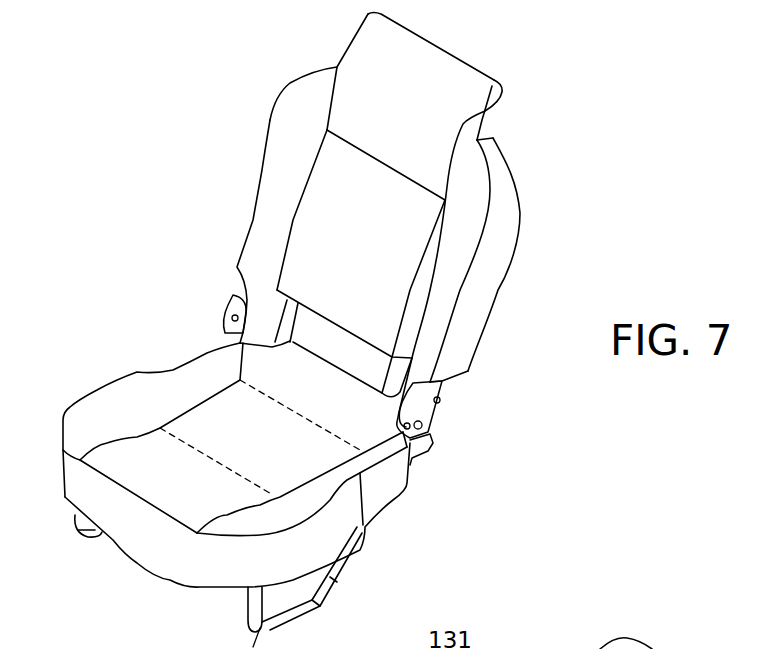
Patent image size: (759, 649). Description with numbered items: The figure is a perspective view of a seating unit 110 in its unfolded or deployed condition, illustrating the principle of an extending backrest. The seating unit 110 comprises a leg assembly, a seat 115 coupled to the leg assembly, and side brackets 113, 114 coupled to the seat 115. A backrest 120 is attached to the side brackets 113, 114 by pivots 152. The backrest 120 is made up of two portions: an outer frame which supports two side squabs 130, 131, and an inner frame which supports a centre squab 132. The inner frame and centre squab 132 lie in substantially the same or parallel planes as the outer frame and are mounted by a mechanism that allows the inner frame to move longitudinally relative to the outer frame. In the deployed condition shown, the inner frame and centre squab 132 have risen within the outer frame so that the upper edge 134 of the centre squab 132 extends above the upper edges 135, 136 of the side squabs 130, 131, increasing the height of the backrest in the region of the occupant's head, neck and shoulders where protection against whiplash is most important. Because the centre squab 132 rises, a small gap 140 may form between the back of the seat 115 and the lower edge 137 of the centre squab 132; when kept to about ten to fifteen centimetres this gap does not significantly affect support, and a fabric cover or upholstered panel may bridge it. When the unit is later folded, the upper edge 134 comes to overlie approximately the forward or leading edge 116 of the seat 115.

The seating unit 110 is at (172, 180).
The side bracket 113 is at (433, 427).
The side bracket 114 is at (223, 327).
The seat 115 is at (77, 492).
The leading edge of seat squab 116 is at (137, 500).
The backrest 120 is at (527, 190).
The side squab 130 is at (467, 335).
The side squab 131 is at (263, 200).
The centre squab 132 is at (429, 97).
The upper edge of centre squab 134 is at (447, 53).
The upper edge of side squab 135 is at (497, 153).
The upper edge of side squab 136 is at (307, 87).
The lower edge of centre squab 137 is at (335, 323).
The gap 140 is at (343, 355).
The pivot 152 is at (427, 422).